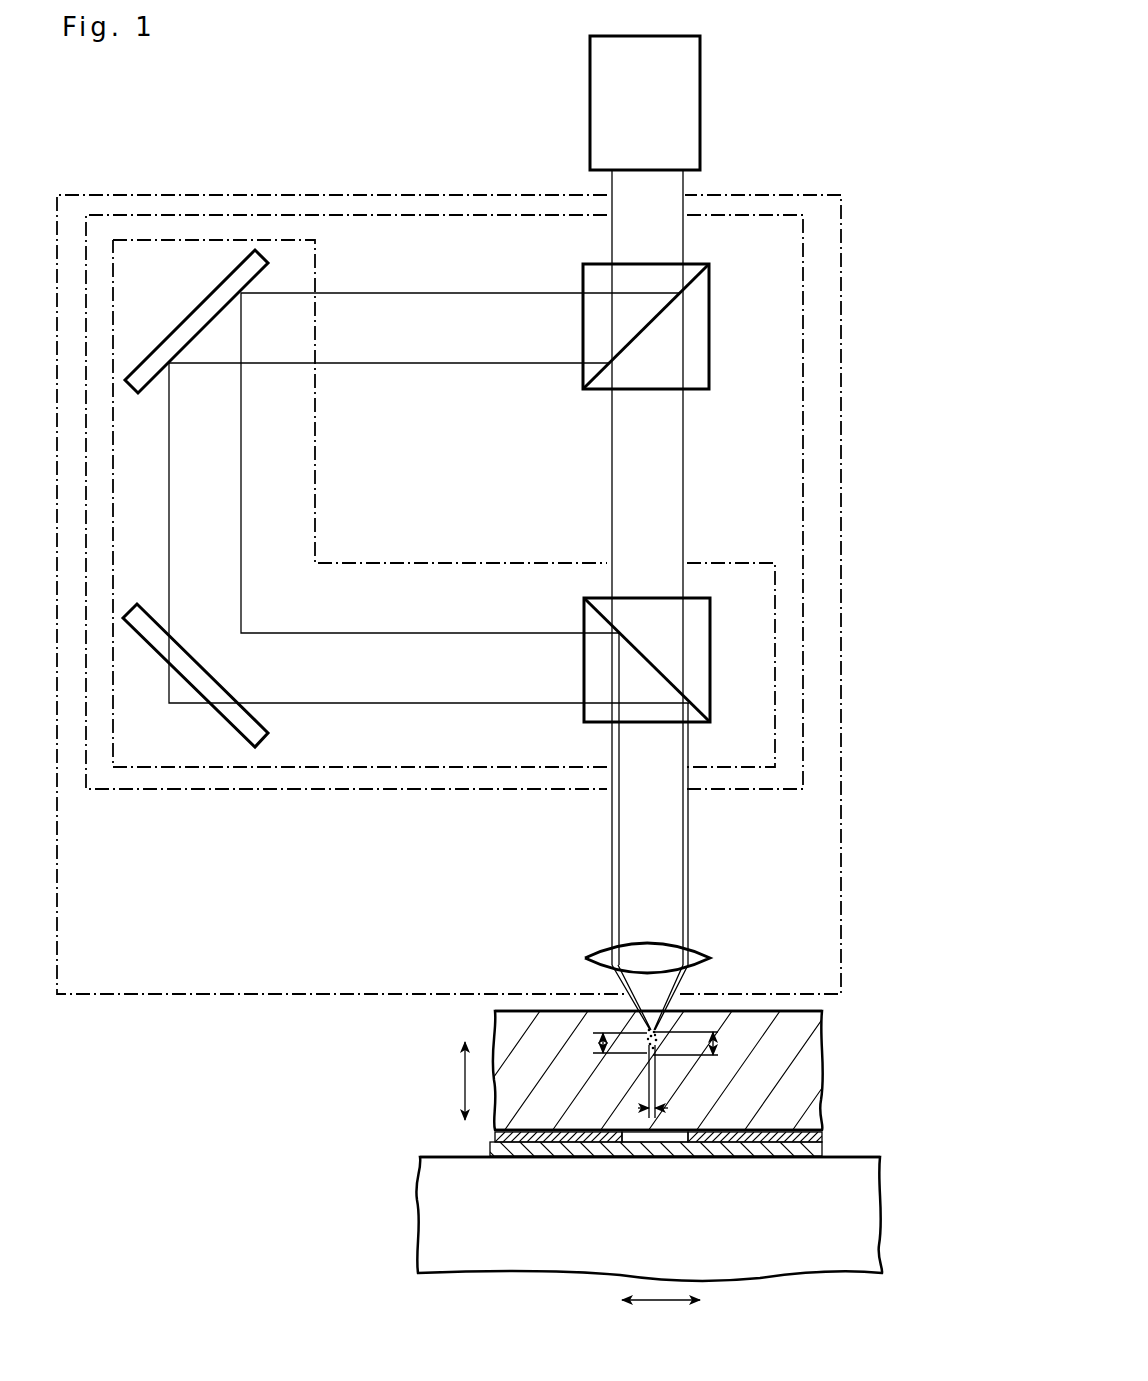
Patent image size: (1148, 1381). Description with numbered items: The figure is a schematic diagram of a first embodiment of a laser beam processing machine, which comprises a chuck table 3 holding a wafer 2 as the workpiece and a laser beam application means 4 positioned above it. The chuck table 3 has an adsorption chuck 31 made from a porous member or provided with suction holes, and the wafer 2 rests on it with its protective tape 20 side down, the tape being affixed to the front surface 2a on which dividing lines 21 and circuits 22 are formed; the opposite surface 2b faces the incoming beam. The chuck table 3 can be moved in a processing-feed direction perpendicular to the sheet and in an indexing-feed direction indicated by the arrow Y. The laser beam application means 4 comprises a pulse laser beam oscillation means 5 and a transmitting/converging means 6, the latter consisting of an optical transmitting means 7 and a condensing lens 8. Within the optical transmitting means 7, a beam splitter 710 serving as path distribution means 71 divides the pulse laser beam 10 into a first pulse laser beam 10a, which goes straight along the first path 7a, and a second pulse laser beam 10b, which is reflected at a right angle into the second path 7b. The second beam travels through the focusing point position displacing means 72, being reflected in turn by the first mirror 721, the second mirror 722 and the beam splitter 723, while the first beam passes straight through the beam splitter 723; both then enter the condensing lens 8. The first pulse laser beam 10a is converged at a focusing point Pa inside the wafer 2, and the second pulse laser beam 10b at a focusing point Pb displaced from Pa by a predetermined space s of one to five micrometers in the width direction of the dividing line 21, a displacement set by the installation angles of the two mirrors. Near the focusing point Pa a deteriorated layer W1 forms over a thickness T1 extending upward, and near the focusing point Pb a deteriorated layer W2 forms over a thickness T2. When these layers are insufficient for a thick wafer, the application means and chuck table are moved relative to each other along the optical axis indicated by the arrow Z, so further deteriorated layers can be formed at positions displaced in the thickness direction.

The wafer 2 is at (808, 1068).
The front surface 2a is at (808, 1158).
The front surface of wafer 2b is at (788, 1010).
The chuck table 3 is at (617, 1185).
The adsorption chuck 31 is at (860, 1157).
The laser beam application means 4 is at (772, 108).
The pulse laser beam oscillation means 5 is at (690, 78).
The transmitting/converging means 6 is at (838, 360).
The optical transmitting means 7 is at (803, 429).
The first path 7a is at (715, 425).
The second path 7b is at (453, 280).
The condensing lens 8 is at (695, 955).
The pulse laser beam 10 is at (688, 183).
The first pulse laser beam 10a is at (685, 490).
The second pulse laser beam 10b is at (510, 362).
The protective tape 20 is at (493, 1148).
The dividing line 21 is at (654, 1140).
The circuit 22 is at (566, 1158).
The path distribution means 71 is at (693, 303).
The beam splitter 710 is at (710, 308).
The focusing point position displacing means 72 is at (193, 238).
The first mirror 721 is at (192, 305).
The second mirror 722 is at (185, 673).
The beam splitter 723 is at (584, 716).
The deteriorated layer W1 is at (641, 1050).
The deteriorated layer W2 is at (657, 1035).
The thickness T1 is at (601, 1042).
The thickness T2 is at (705, 1045).
The focusing point Pa is at (645, 1078).
The focusing point Pb is at (655, 1050).
The space s is at (639, 1104).
The arrow Z is at (450, 1081).
The arrow Y is at (661, 1318).